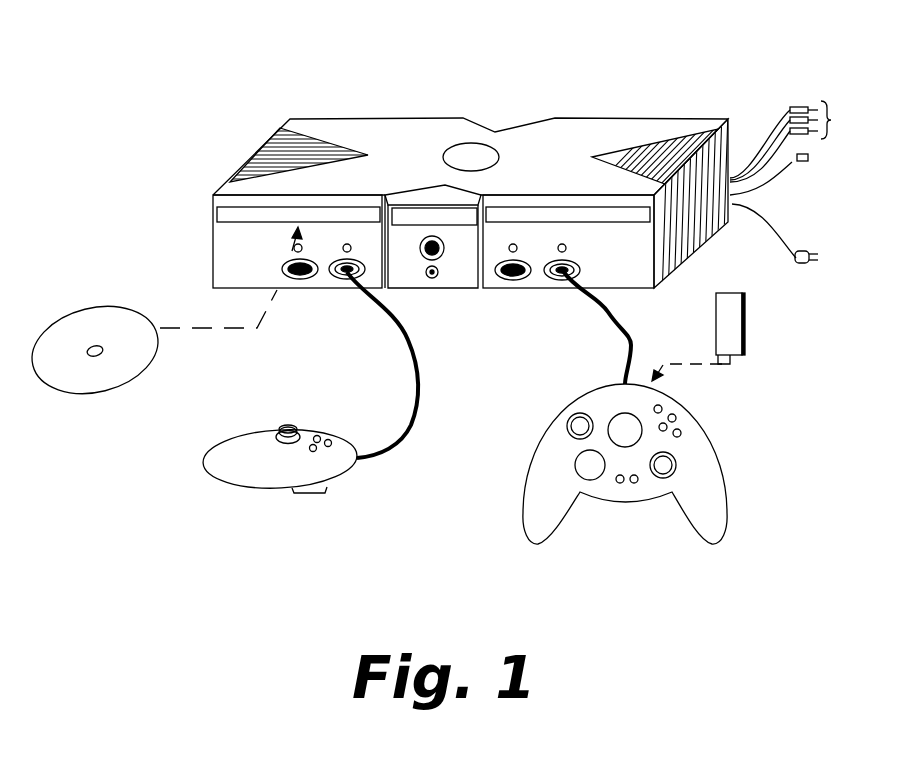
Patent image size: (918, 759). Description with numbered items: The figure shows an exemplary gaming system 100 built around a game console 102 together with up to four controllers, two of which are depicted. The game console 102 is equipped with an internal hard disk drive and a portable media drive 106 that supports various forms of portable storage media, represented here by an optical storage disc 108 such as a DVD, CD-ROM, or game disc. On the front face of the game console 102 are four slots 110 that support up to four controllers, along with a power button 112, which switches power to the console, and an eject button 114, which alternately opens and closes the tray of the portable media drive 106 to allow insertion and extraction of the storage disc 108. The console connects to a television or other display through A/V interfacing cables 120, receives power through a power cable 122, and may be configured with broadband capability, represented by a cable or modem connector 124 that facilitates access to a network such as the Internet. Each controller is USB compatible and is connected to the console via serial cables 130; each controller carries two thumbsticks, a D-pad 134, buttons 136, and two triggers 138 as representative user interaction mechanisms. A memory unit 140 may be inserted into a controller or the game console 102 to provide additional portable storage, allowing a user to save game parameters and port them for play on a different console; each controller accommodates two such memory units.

The gaming system 100 is at (624, 37).
The game console 102 is at (328, 119).
The portable media drive 106 is at (228, 213).
The optical storage disc 108 is at (107, 388).
The slots 110 is at (345, 278).
The power button 112 is at (432, 279).
The eject button 114 is at (432, 236).
The A/V interfacing cables 120 is at (798, 104).
The power cable 122 is at (797, 262).
The cable or modem connector 124 is at (766, 182).
The serial cables 130 is at (419, 373).
The D-pad 134 is at (576, 463).
The buttons 136 is at (676, 418).
The triggers 138 is at (328, 490).
The memory unit 140 is at (745, 324).